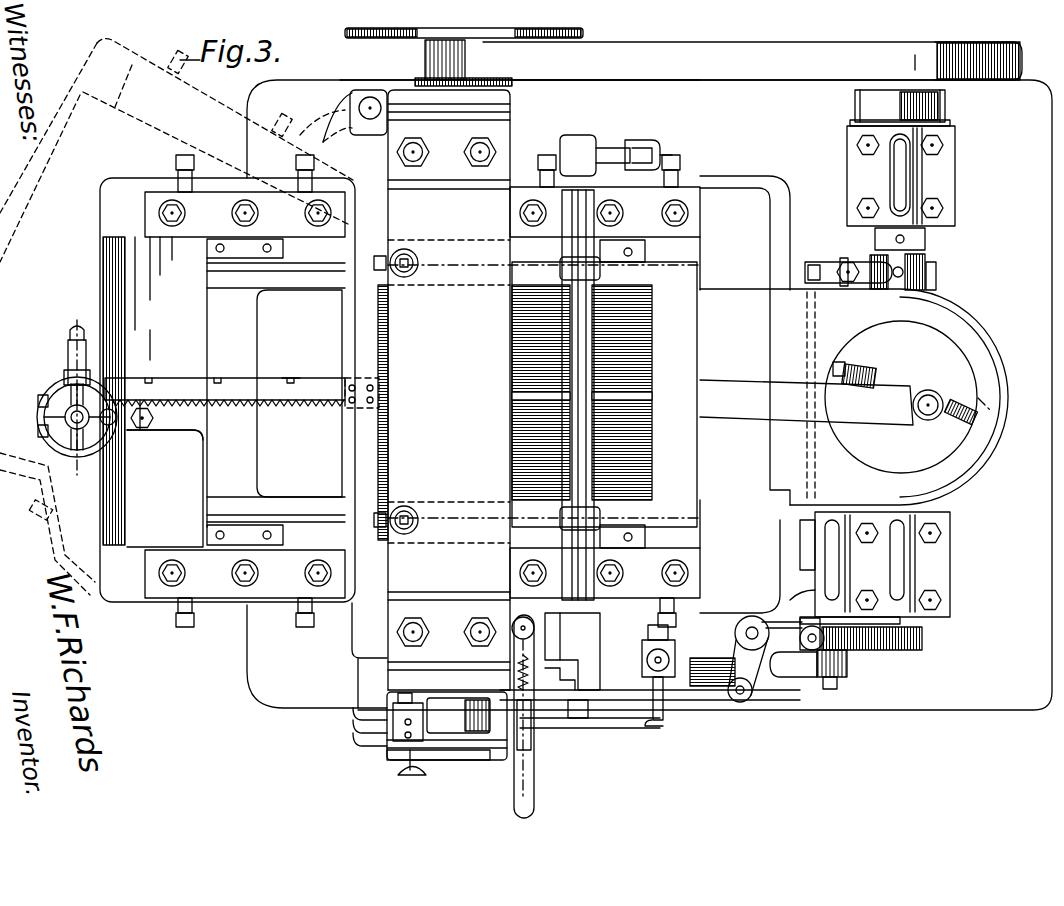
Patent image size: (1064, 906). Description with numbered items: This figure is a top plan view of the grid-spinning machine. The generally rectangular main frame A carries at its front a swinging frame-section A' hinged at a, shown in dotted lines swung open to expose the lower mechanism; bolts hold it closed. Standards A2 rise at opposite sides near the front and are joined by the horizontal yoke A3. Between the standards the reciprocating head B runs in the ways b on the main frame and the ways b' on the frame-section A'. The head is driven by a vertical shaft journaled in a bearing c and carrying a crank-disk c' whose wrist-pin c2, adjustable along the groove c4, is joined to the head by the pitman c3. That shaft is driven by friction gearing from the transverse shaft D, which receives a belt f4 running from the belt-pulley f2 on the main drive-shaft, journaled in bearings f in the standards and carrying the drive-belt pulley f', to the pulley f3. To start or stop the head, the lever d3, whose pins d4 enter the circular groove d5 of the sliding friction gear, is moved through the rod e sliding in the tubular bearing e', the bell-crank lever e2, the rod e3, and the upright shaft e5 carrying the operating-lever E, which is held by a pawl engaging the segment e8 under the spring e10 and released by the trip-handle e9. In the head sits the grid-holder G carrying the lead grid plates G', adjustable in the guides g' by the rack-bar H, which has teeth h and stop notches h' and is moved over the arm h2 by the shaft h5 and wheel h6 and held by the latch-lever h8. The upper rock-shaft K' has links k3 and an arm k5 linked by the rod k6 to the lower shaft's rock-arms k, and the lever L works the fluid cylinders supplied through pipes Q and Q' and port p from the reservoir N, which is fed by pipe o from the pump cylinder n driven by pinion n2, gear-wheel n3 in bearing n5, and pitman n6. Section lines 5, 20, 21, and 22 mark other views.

The main or stationary frame A is at (649, 395).
The front swinging frame-section A' is at (207, 390).
The standards A2 is at (525, 114).
The horizontal yoke or top frame A3 is at (442, 390).
The hinge a is at (368, 95).
The longitudinal ways b is at (605, 391).
The longitudinal ways b' is at (245, 391).
The reciprocating head B is at (285, 393).
The bearing c is at (967, 414).
The crank-disk c' is at (901, 397).
The wrist-pin c2 is at (932, 398).
The pitman c3 is at (806, 402).
The groove c4 is at (866, 371).
The lever d3 is at (866, 263).
The pins d4 is at (930, 278).
The circular groove d5 is at (925, 266).
The transverse shaft D is at (925, 250).
The transverse horizontal rod e is at (871, 568).
The tubular bearing e' is at (825, 396).
The bell-crank lever e2 is at (776, 659).
The forwardly-extending rod e3 is at (682, 698).
The upright shaft e5 is at (515, 618).
The stationary segment e8 is at (560, 678).
The trip-handle e9 is at (535, 752).
The spring e10 is at (515, 660).
The operating-lever E is at (535, 800).
The bearings f is at (447, 726).
The drive-belt pulley f' is at (477, 25).
The belt-pulley f2 is at (425, 74).
The pulley f3 is at (876, 104).
The belt f4 is at (681, 61).
The longitudinal guides g' is at (634, 394).
The grid-holder G is at (611, 394).
The lead grid plate G' is at (594, 392).
The teeth h is at (242, 403).
The stop notches h' is at (218, 367).
The arm h2 is at (182, 408).
The vertical operating-shaft h5 is at (38, 410).
The crank handle or wheel h6 is at (40, 437).
The latch-lever h8 is at (62, 385).
The rack-bar H is at (312, 376).
The rock-arms k is at (597, 272).
The links or rods k3 is at (545, 268).
The arm k5 is at (610, 150).
The link or rod k6 is at (666, 150).
The upper rock-shaft K' is at (639, 395).
The lever L is at (598, 652).
The pump cylinder n is at (712, 661).
The pinion n2 is at (925, 640).
The gear-wheel n3 is at (868, 652).
The bearing n5 is at (812, 592).
The pitman n6 is at (804, 668).
The reservoir N is at (476, 750).
The pipe o is at (622, 726).
The port or passage p is at (408, 717).
The pipe Q is at (356, 655).
The pipe Q' is at (353, 727).
The foot T' is at (397, 763).
The section line 5 5 is at (985, 404).
The section line 20 20 is at (77, 393).
The section line 21 21 is at (543, 704).
The section line 22 22 is at (1020, 262).